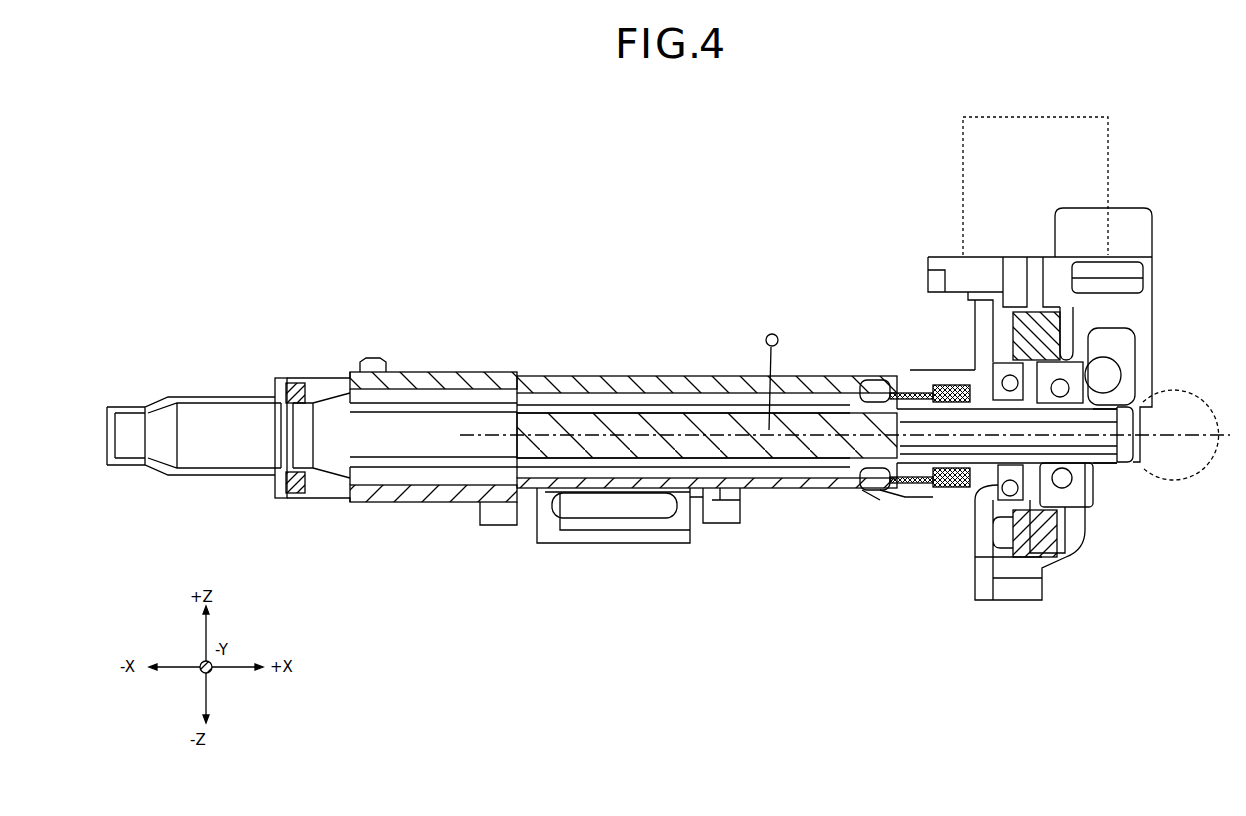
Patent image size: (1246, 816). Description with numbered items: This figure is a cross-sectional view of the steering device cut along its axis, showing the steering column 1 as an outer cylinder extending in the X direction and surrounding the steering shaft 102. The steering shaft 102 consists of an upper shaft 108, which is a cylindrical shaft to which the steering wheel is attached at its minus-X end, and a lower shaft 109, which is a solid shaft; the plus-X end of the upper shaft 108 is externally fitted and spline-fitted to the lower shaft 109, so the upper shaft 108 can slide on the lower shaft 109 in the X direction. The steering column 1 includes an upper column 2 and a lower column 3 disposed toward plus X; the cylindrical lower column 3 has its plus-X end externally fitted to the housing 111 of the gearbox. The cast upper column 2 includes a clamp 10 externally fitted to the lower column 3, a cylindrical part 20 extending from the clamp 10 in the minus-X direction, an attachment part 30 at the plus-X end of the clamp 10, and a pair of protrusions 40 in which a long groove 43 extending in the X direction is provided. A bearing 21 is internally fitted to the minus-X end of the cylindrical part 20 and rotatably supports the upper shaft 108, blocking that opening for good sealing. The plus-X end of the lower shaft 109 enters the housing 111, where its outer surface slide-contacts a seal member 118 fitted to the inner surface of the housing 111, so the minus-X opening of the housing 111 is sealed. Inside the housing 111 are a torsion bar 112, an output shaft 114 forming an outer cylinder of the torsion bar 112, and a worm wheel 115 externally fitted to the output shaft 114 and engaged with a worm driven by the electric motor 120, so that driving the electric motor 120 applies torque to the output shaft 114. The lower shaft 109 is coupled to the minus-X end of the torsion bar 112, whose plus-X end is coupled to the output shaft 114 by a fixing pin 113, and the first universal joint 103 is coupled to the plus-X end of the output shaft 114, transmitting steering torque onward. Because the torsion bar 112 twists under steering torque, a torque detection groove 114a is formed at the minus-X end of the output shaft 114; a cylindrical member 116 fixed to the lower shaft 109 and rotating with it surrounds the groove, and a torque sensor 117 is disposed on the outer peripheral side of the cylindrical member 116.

The steering column 1 is at (637, 322).
The upper column 2 is at (497, 365).
The lower column 3 is at (803, 350).
The clamp 10 is at (592, 376).
The cylindrical part 20 is at (414, 372).
The bearing 21 is at (297, 494).
The attachment part 30 is at (725, 524).
The protrusion 40 is at (614, 567).
The long groove 43 is at (592, 520).
The steering shaft 102 is at (252, 378).
The first universal joint 103 is at (1147, 395).
The upper shaft 108 is at (205, 397).
The lower shaft 109 is at (713, 413).
The housing 111 is at (893, 397).
The torsion bar 112 is at (1087, 480).
The fixing pin 113 is at (1145, 465).
The output shaft 114 is at (1087, 392).
The torque detection groove 114a is at (893, 482).
The worm wheel 115 is at (1047, 360).
The cylindrical member 116 is at (923, 383).
The torque sensor 117 is at (985, 520).
The seal member 118 is at (890, 500).
The electric motor 120 is at (1054, 112).